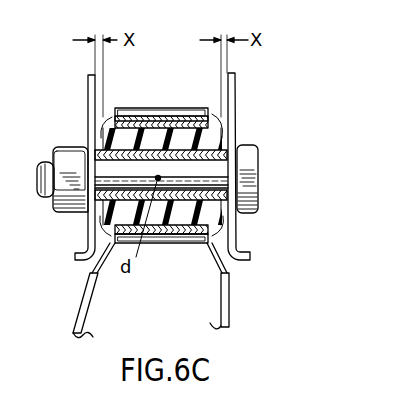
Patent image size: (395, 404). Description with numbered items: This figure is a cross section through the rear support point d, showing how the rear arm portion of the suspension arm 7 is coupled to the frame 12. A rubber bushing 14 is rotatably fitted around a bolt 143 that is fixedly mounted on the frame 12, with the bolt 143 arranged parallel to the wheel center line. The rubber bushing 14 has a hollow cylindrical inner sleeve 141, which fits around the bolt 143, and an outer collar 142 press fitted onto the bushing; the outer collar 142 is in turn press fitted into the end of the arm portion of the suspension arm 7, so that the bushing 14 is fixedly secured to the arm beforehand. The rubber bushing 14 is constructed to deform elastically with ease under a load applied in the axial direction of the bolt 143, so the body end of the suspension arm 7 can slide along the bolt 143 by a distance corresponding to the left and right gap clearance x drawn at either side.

The suspension arm 7 is at (164, 108).
The frame 12 is at (237, 80).
The rubber bushing 14 is at (210, 143).
The hollow cylindrical inner sleeve 141 is at (221, 204).
The outer collar 142 is at (214, 118).
The bolt 143 is at (259, 172).